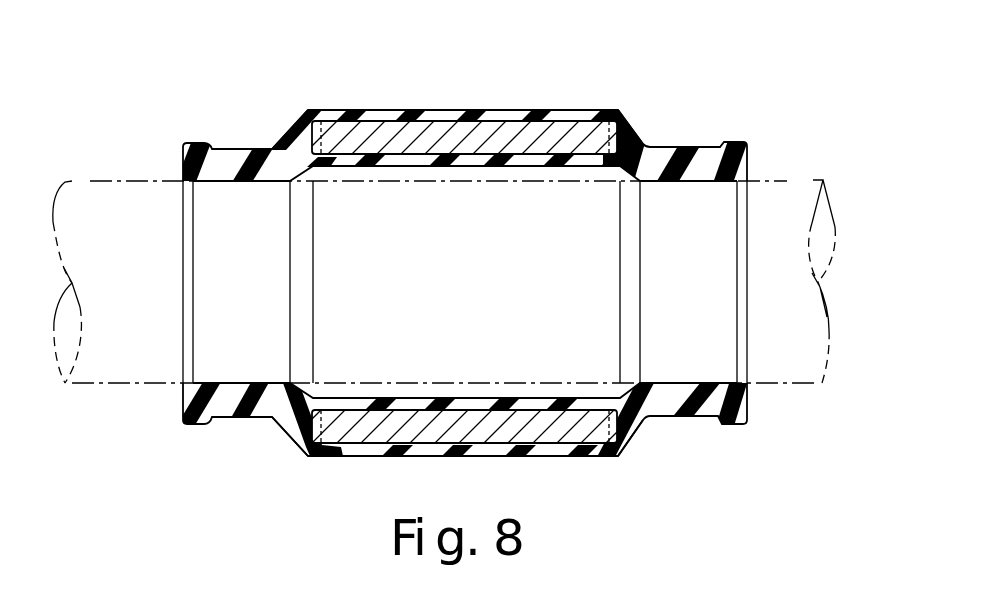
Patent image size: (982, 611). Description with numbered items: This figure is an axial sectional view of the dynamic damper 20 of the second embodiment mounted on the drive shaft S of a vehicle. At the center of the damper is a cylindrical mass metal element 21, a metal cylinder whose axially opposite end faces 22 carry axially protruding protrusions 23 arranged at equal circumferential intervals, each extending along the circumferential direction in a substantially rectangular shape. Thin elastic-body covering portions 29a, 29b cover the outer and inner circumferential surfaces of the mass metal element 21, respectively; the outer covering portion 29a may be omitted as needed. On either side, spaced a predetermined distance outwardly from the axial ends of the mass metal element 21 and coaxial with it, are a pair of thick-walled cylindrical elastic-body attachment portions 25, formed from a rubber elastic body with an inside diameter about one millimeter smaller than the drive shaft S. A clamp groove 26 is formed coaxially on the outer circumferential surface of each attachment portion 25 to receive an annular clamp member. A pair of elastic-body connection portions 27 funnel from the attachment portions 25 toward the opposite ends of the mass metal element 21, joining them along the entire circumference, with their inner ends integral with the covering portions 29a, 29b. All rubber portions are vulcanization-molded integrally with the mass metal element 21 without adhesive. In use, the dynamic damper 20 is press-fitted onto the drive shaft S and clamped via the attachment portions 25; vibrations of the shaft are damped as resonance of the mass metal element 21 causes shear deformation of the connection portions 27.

The dynamic damper 20 is at (592, 88).
The mass metal element 21 is at (513, 120).
The axially opposite end faces 22 is at (313, 120).
The protrusions 23 is at (290, 135).
The elastic-body attachment portions 25 is at (183, 143).
The clamp groove 26 is at (237, 149).
The elastic-body connection portions 27 is at (289, 177).
The elastic-body covering portion 29a is at (406, 110).
The elastic-body covering portion 29b is at (452, 166).
The drive shaft S is at (797, 180).